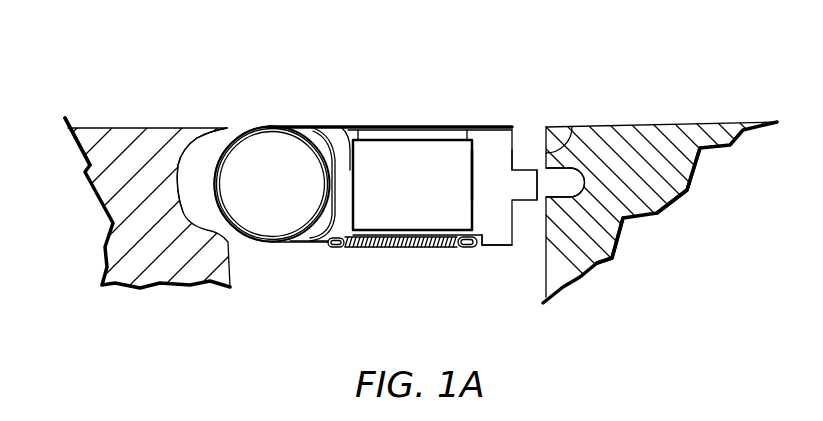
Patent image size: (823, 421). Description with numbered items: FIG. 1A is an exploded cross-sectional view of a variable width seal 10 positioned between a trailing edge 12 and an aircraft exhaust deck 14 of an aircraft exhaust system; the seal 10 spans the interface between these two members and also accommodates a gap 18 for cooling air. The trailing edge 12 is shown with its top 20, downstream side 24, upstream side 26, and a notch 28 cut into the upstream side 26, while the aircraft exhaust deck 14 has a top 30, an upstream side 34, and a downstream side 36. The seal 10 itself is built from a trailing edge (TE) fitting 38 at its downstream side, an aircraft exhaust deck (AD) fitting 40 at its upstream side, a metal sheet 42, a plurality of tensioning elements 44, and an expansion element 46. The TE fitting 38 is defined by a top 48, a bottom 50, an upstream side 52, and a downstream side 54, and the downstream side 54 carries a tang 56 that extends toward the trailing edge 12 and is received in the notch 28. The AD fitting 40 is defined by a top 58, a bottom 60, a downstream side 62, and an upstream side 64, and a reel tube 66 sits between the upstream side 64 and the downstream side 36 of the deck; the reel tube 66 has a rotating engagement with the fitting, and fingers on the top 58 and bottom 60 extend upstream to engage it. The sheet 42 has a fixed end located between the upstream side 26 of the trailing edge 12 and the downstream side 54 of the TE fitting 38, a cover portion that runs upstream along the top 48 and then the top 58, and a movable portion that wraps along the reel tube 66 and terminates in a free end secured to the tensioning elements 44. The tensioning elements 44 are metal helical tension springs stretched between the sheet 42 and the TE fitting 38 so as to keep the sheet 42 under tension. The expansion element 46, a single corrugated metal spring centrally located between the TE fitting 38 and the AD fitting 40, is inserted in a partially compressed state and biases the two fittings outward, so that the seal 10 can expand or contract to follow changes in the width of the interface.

The variable width seal 10 is at (402, 78).
The trailing edge 12 is at (685, 240).
The aircraft exhaust deck 14 is at (78, 234).
The gap 18 is at (190, 148).
The top 20 is at (658, 125).
The downstream side 24 is at (683, 155).
The upstream side 26 is at (568, 130).
The notch 28 is at (588, 172).
The top 30 is at (155, 128).
The upstream side 34 is at (106, 147).
The downstream side 36 is at (183, 146).
The trailing edge fitting 38 is at (490, 262).
The aircraft exhaust deck fitting 40 is at (340, 268).
The sheet 42 is at (413, 127).
The tensioning elements 44 is at (405, 250).
The expansion element 46 is at (430, 160).
The top 48 is at (507, 135).
The bottom 50 is at (510, 237).
The upstream side 52 is at (473, 172).
The downstream side 54 is at (512, 167).
The tang 56 is at (522, 190).
The top 58 is at (337, 138).
The bottom 60 is at (336, 226).
The downstream side 62 is at (348, 138).
The upstream side 64 is at (307, 138).
The reel tube 66 is at (228, 215).